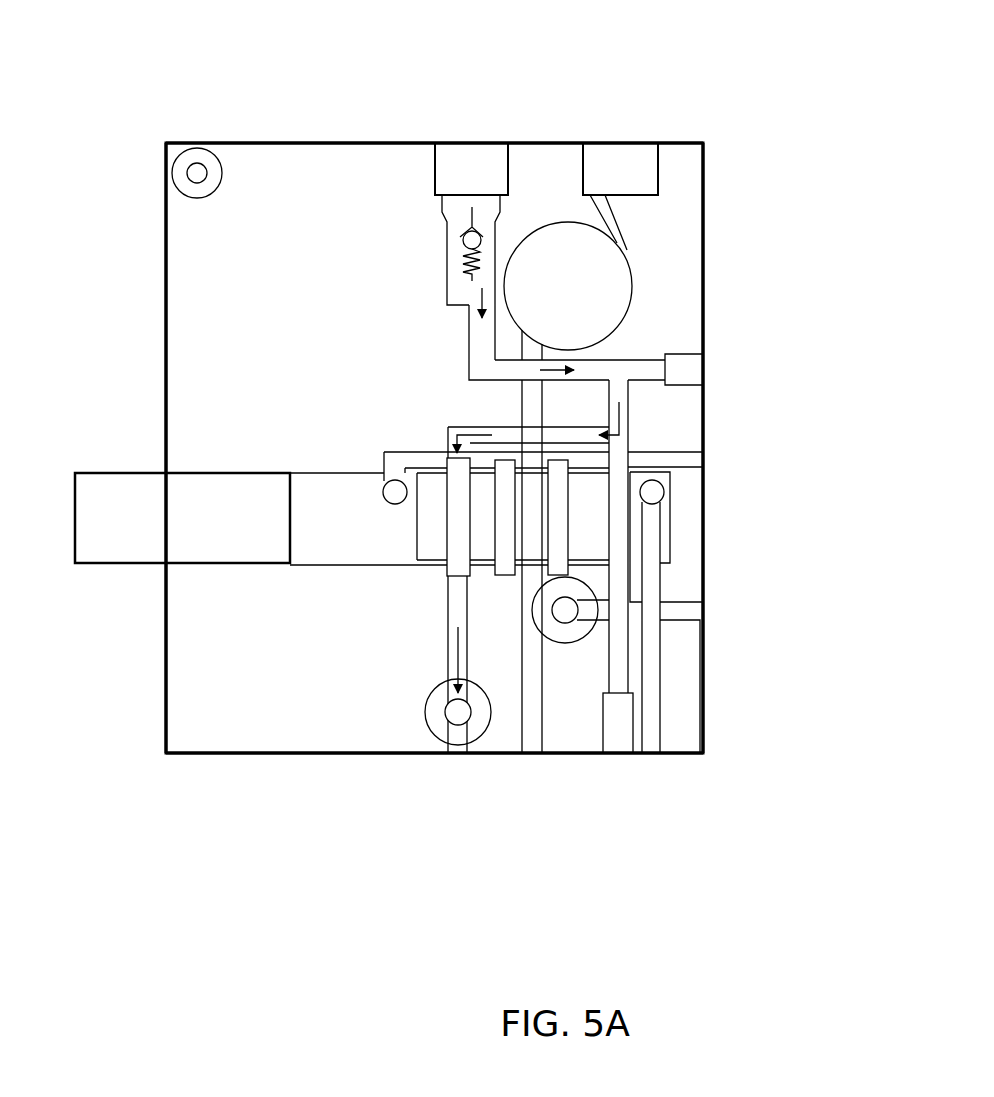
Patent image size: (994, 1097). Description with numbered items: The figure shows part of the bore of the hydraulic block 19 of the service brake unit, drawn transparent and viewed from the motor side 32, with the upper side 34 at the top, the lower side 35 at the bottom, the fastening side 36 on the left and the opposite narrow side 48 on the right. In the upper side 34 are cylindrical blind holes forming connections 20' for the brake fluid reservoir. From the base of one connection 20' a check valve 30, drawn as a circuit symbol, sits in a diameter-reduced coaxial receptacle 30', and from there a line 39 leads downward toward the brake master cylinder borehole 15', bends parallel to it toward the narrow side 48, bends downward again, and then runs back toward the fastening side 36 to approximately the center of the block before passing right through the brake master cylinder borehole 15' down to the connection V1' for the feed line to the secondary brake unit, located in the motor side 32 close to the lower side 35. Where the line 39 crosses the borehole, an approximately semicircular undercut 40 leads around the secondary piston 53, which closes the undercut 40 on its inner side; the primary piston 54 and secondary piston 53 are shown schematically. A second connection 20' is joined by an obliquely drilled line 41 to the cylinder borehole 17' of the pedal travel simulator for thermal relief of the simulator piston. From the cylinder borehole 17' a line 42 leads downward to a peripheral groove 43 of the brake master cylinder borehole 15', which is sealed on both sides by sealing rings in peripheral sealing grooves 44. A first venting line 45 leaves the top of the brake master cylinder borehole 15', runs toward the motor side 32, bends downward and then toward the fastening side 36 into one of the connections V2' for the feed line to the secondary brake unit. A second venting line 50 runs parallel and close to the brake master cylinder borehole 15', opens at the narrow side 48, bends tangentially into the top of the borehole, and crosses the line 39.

The hydraulic block 19 is at (235, 90).
The motor side 32 is at (266, 338).
The upper side 34 is at (360, 142).
The fastening side 36 is at (163, 245).
The lower side 35 is at (278, 755).
The narrow side 48 is at (708, 683).
The connection for the brake fluid reservoir 20' is at (546, 127).
The check valve 30 is at (426, 277).
The receptacle 30' is at (414, 239).
The line 41 is at (605, 218).
The cylinder borehole of the pedal travel simulator 17' is at (642, 286).
The line 39 is at (473, 343).
The line 42 is at (528, 400).
The undercut 40 is at (458, 515).
The brake master cylinder borehole 15' is at (321, 442).
The second venting line 50 is at (418, 455).
The secondary piston 53 is at (435, 547).
The peripheral groove 43 is at (530, 535).
The sealing grooves 44 is at (558, 460).
The first venting line 45 is at (668, 490).
The connection for the feed line V1' is at (455, 773).
The connection for the feed line V2' is at (582, 695).
The primary piston 54 is at (223, 528).